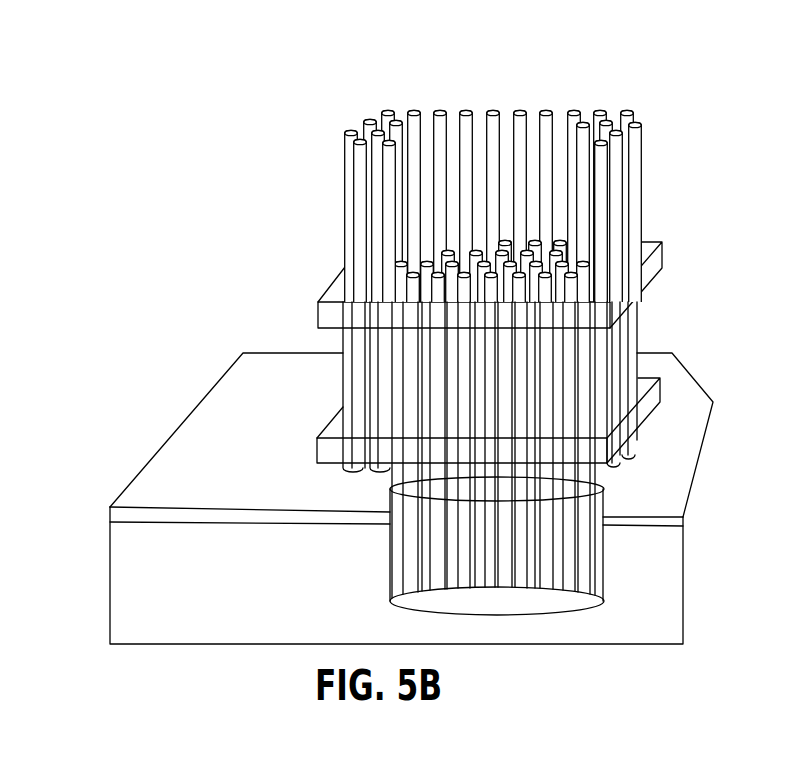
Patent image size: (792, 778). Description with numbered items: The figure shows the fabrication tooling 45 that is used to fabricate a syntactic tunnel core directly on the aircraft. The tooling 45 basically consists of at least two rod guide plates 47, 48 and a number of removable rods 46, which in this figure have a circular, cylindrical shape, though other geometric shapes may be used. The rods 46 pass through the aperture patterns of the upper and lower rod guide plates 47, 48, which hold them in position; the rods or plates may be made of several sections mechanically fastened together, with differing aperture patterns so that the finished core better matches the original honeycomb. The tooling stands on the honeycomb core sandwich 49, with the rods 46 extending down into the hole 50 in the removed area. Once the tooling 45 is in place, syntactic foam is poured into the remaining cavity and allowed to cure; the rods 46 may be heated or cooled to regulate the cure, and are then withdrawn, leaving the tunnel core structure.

The fabrication tooling 45 is at (364, 54).
The removable rods 46 is at (630, 118).
The rod guide plate 47 is at (662, 242).
The rod guide plate 48 is at (648, 380).
The honeycomb core sandwich panel 49 is at (110, 522).
The hole in sandwich panel 50 is at (604, 484).